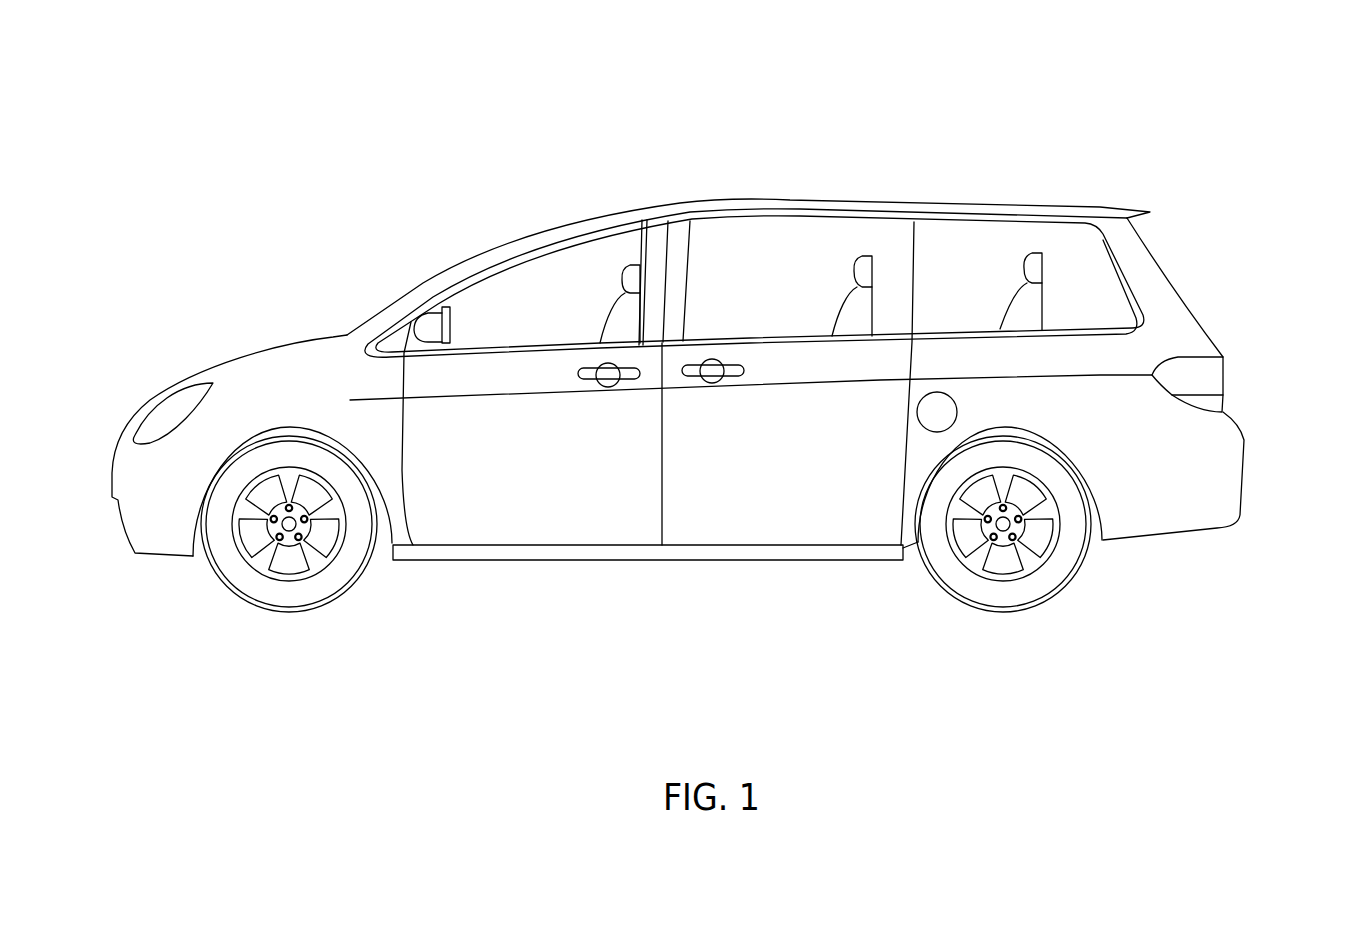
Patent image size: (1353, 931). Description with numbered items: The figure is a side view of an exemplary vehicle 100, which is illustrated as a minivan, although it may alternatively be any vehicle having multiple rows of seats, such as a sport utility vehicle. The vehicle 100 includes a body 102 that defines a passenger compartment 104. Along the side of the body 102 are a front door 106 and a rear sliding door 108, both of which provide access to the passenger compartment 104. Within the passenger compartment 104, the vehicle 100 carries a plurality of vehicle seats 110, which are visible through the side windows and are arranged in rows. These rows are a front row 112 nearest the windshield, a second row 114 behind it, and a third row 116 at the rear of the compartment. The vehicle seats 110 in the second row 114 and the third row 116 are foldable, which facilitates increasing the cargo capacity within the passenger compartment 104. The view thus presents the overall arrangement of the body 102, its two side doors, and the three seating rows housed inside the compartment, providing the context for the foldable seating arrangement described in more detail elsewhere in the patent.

The vehicle 100 is at (378, 103).
The body 102 is at (1192, 330).
The passenger compartment 104 is at (493, 312).
The front door 106 is at (525, 505).
The rear sliding door 108 is at (753, 510).
The vehicle seats 110 is at (638, 265).
The front row 112 is at (617, 279).
The second row 114 is at (842, 263).
The third row 116 is at (1018, 260).